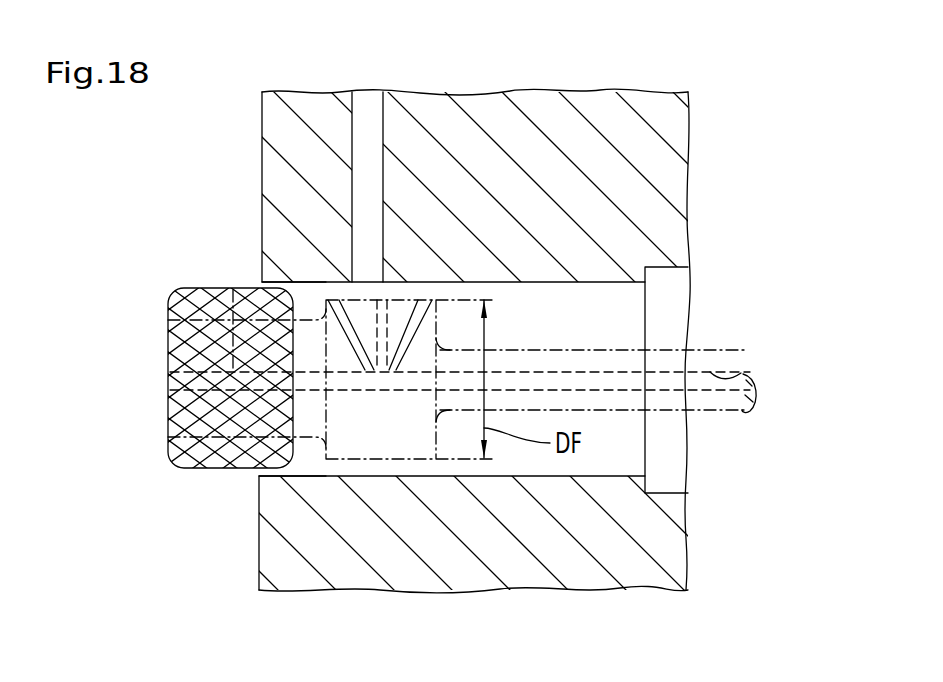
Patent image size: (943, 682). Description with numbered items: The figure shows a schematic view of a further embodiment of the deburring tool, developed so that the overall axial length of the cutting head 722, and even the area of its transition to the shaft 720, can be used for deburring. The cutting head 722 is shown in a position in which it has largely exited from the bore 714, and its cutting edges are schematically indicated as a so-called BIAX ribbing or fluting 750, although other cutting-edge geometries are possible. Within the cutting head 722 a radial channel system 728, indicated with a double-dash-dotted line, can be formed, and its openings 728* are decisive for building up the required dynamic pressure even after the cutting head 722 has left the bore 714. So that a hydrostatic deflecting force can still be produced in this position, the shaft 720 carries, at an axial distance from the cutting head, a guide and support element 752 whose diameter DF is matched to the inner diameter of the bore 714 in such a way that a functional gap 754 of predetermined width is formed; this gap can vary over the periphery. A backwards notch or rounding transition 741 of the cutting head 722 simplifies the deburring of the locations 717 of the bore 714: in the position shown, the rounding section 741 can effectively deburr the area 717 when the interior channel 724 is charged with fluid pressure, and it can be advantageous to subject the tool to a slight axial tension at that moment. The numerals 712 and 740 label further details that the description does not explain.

The slot / channel in upper housing block 712 is at (383, 120).
The bore 714 is at (610, 283).
The locations of bore 717 is at (250, 270).
The shaft 720 is at (695, 402).
The cutting head 722 is at (172, 303).
The interior channel 724 is at (747, 357).
The radial channel system 728 is at (233, 290).
The filter element corner 740 is at (166, 484).
The rounding transition 741 is at (307, 469).
The BIAX ribbing or fluting 750 is at (200, 414).
The guide and support element 752 is at (413, 448).
The functional gap 754 is at (413, 300).